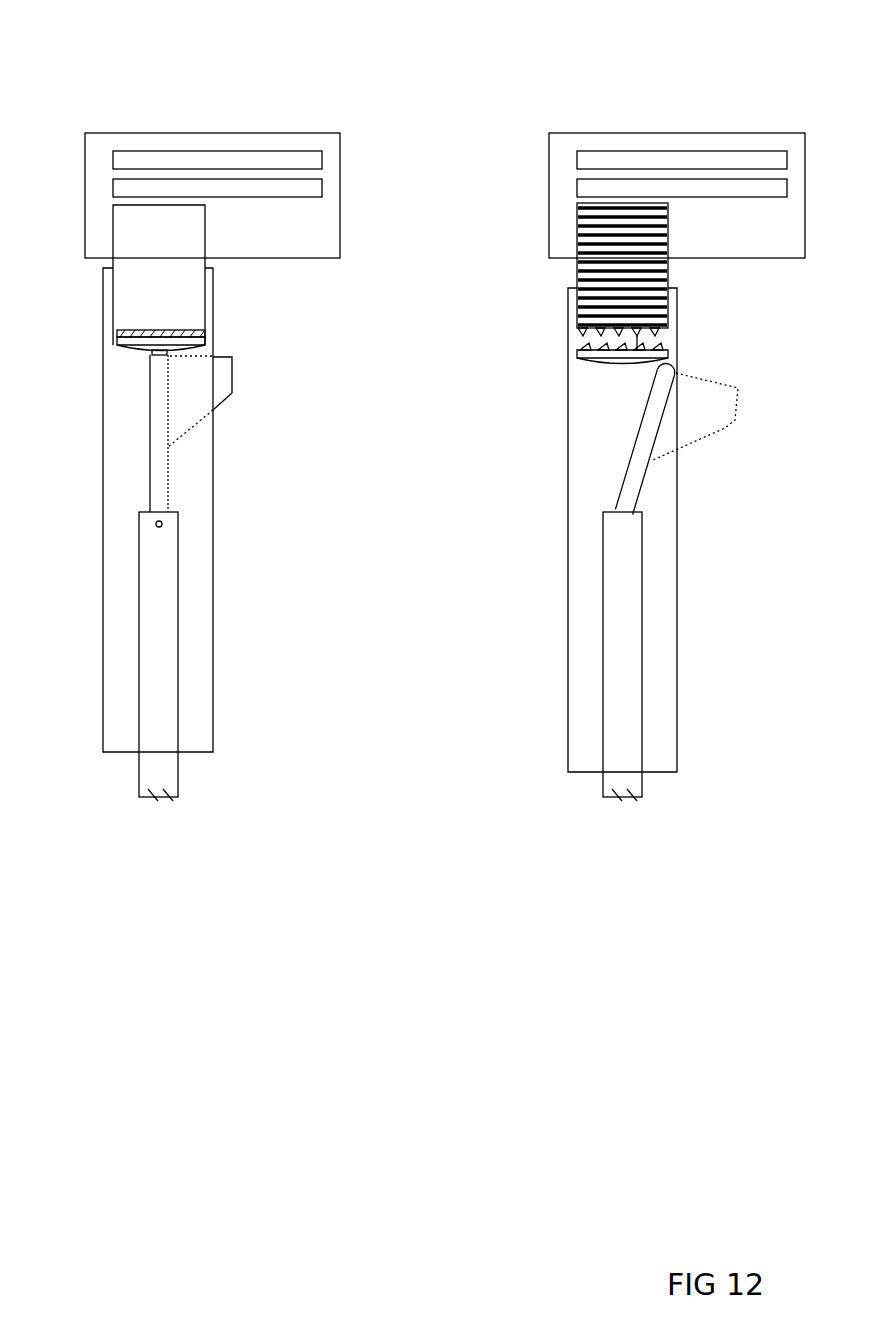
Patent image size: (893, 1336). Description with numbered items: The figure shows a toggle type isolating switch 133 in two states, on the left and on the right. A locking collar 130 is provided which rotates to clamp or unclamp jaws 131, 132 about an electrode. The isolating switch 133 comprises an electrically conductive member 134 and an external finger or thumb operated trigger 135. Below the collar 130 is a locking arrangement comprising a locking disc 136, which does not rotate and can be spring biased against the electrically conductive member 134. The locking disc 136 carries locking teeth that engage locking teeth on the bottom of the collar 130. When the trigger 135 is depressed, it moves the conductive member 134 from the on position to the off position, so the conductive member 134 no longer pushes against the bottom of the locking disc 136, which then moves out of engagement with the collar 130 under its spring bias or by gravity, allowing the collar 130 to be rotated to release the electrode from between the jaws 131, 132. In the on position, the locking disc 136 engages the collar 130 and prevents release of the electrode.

The locking collar 130 is at (173, 247).
The jaw 131 is at (608, 158).
The jaw 132 is at (590, 187).
The isolating switch 133 is at (137, 457).
The electrically conductive member 134 is at (638, 468).
The trigger 135 is at (720, 442).
The locking disc 136 is at (600, 348).